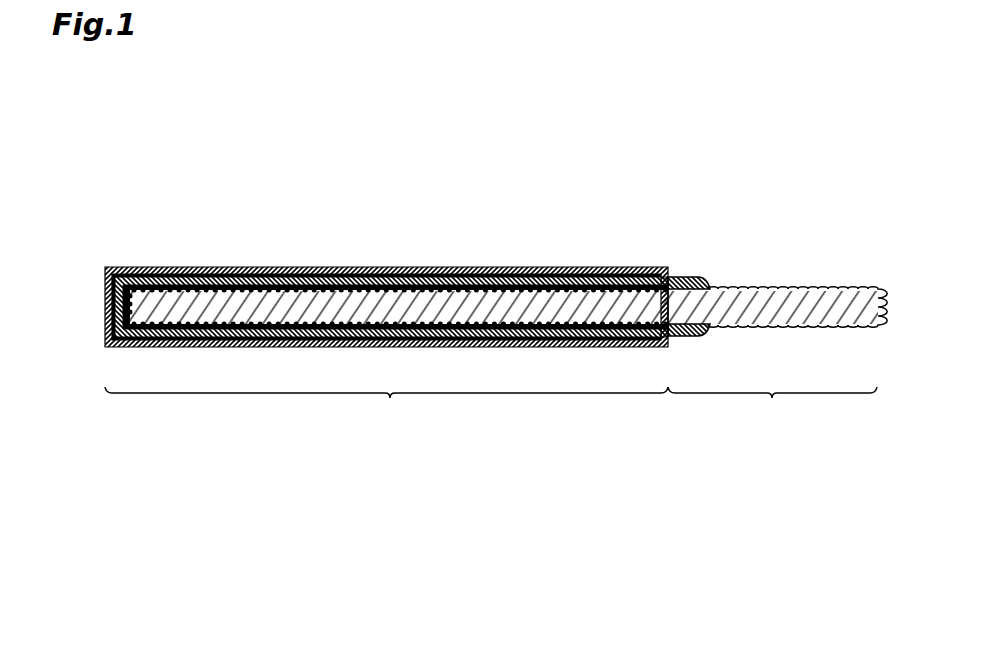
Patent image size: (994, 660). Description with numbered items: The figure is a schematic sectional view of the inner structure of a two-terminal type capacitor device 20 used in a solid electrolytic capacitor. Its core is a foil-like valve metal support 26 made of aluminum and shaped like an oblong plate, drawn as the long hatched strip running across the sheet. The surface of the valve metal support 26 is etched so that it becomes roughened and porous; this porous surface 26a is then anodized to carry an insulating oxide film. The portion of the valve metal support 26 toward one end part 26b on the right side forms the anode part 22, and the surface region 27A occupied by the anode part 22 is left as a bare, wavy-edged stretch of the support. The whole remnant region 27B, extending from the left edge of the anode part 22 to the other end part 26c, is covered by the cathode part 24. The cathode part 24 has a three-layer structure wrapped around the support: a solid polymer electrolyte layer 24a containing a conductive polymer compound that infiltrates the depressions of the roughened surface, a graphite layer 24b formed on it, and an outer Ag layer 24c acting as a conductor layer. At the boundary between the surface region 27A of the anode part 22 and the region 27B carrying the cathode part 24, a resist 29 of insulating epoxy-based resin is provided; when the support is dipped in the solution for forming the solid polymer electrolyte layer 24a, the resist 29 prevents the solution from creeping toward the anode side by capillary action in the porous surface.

The capacitor device 20 is at (172, 164).
The anode part 22 is at (810, 296).
The cathode part 24 is at (105, 267).
The solid polymer electrolyte layer 24a is at (345, 270).
The graphite layer 24b is at (405, 277).
The Ag layer 24c is at (455, 285).
The valve metal support 26 is at (752, 305).
The porous surface 26a is at (573, 289).
The one end part 26b is at (830, 312).
The other end part 26c is at (157, 312).
The resist 29 is at (687, 280).
The surface region 27A is at (772, 405).
The remnant region 27B is at (386, 406).